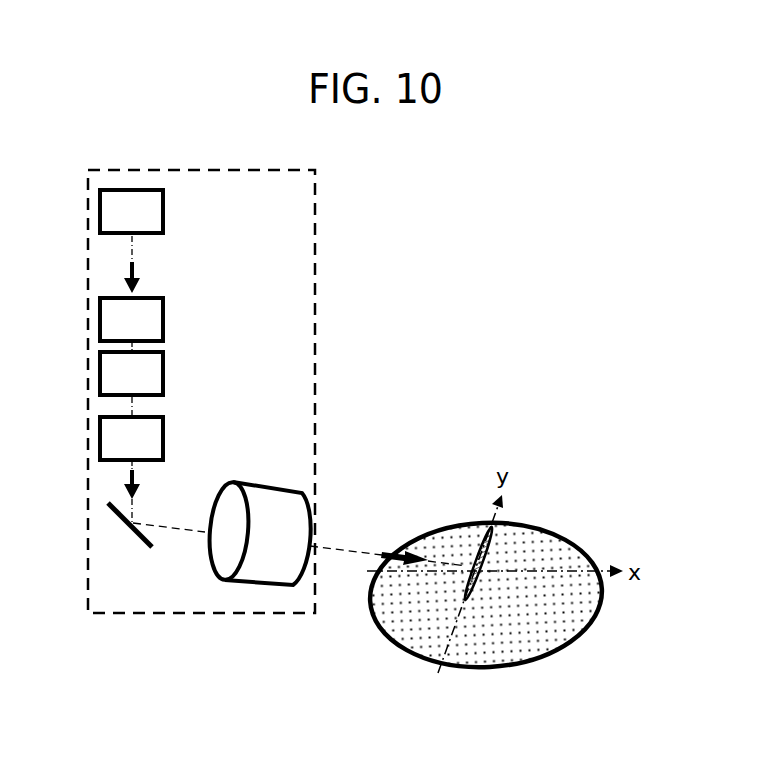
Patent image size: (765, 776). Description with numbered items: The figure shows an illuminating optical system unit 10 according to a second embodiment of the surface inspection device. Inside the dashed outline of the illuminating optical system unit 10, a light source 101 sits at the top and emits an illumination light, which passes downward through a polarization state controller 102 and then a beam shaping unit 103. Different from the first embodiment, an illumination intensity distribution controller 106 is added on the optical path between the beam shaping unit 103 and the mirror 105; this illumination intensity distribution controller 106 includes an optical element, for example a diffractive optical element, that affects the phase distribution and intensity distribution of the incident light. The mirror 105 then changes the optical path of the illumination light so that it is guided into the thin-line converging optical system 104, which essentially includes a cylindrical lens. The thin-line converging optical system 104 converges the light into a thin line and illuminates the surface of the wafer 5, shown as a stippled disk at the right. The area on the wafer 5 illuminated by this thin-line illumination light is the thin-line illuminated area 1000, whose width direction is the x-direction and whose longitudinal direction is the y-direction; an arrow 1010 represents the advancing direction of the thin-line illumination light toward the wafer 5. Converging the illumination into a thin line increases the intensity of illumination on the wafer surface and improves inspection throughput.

The illuminating optical system unit 10 is at (171, 170).
The light source 101 is at (131, 211).
The polarization state controller 102 is at (131, 319).
The beam shaping unit 103 is at (131, 373).
The illumination intensity distribution controller 106 is at (131, 438).
The mirror 105 is at (133, 531).
The thin-line converging optical system 104 is at (258, 533).
The arrow representing advancing direction of thin-line illumination light 1010 is at (388, 553).
The thin-line illuminated area 1000 is at (485, 556).
The wafer 5 is at (410, 632).